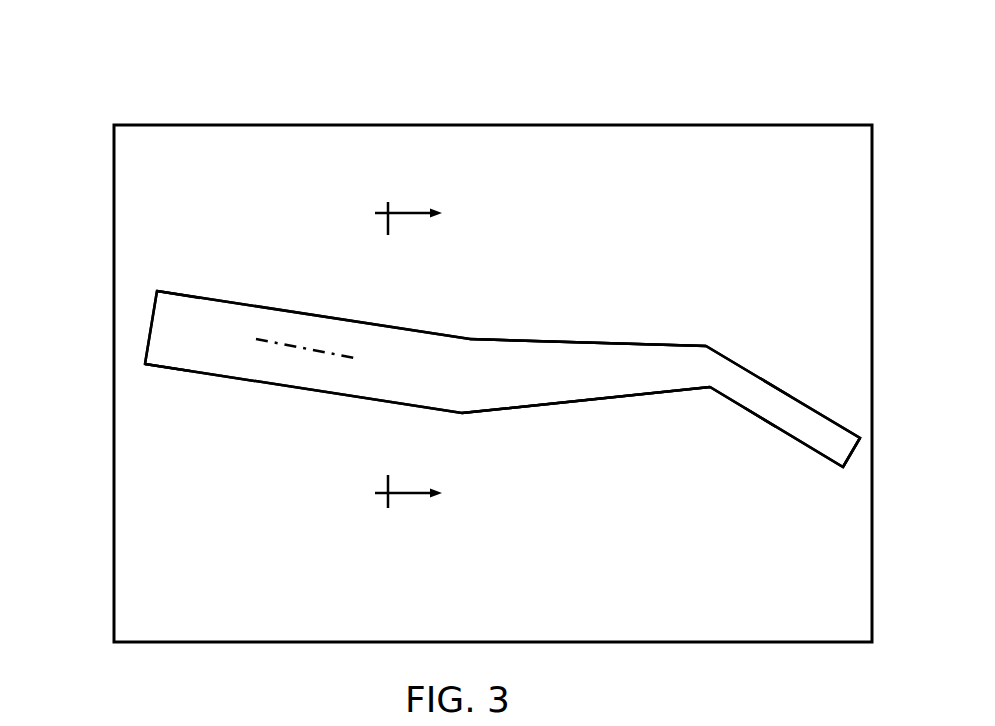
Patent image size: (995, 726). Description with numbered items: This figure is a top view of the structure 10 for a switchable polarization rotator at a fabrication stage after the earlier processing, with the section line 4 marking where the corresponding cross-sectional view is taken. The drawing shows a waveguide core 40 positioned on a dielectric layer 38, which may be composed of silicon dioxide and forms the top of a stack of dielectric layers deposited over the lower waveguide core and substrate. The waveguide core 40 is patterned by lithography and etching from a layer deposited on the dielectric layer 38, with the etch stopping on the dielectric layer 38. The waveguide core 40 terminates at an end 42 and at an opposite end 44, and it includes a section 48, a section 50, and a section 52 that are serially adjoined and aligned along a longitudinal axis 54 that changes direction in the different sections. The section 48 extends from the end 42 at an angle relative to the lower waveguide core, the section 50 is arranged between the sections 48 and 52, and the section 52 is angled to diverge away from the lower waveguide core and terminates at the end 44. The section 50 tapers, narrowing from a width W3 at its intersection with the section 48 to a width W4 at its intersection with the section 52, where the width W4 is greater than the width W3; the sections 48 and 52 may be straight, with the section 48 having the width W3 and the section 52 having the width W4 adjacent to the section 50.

The structure 10 is at (209, 191).
The dielectric layer 38 is at (152, 540).
The waveguide core 40 is at (550, 357).
The end 42 is at (148, 333).
The end 44 is at (849, 461).
The section 48 is at (463, 83).
The section 50 is at (697, 107).
The section 52 is at (855, 85).
The longitudinal axis 54 is at (331, 353).
The width W3 is at (181, 432).
The width W4 is at (723, 469).
The section line for FIG. 4 is at (420, 356).